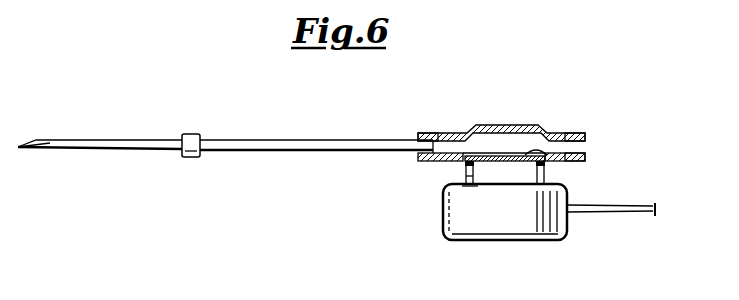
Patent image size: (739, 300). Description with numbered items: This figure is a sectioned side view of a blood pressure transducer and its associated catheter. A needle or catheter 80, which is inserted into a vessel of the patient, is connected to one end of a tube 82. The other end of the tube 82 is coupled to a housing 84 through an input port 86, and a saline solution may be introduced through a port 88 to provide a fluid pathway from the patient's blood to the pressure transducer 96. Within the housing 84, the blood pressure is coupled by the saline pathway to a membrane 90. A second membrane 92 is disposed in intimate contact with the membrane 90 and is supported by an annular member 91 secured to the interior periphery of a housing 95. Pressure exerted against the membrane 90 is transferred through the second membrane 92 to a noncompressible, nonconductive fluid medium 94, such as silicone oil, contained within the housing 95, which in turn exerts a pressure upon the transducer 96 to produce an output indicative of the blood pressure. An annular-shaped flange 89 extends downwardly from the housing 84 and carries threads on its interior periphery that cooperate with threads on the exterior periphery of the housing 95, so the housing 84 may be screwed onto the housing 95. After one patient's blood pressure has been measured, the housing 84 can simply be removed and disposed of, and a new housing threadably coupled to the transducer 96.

The needle or catheter 80 is at (112, 138).
The tube 82 is at (298, 138).
The housing 84 is at (505, 116).
The input port 86 is at (418, 135).
The port 88 is at (578, 145).
The annular-shaped flange 89 is at (558, 171).
The membrane 90 is at (548, 162).
The annular member 91 is at (463, 164).
The second membrane 92 is at (470, 186).
The noncompressible, nonconductive fluid medium 94 is at (542, 179).
The housing 95 is at (466, 176).
The pressure transducer 96 is at (525, 230).